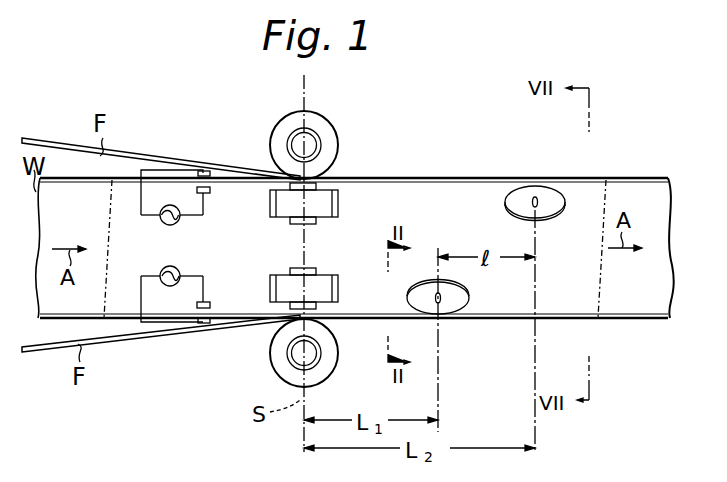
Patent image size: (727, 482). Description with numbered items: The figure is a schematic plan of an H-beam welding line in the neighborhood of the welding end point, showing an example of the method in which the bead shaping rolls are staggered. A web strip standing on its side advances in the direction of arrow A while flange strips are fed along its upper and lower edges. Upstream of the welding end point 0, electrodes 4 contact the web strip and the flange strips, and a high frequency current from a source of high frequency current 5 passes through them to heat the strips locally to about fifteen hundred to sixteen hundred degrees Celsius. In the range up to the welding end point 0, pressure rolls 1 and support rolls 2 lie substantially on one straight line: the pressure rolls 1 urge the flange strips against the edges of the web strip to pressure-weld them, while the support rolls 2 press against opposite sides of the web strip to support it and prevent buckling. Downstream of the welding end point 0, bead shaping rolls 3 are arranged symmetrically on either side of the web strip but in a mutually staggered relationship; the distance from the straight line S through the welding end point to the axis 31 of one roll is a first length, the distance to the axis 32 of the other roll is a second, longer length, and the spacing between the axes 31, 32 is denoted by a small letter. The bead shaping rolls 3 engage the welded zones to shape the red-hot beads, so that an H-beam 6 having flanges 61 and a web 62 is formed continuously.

The pressure rolls 1 is at (330, 130).
The support rolls 2 is at (338, 205).
The welding end point 0 is at (333, 178).
The bead shaping rolls 3 is at (520, 186).
The electrodes 4 is at (208, 168).
The source of high frequency current 5 is at (178, 224).
The H-beam 6 is at (630, 148).
The axis of one bead shaping roll 31 is at (440, 374).
The axis of the other bead shaping roll 32 is at (537, 344).
The flanges 61 is at (658, 176).
The web 62 is at (668, 270).